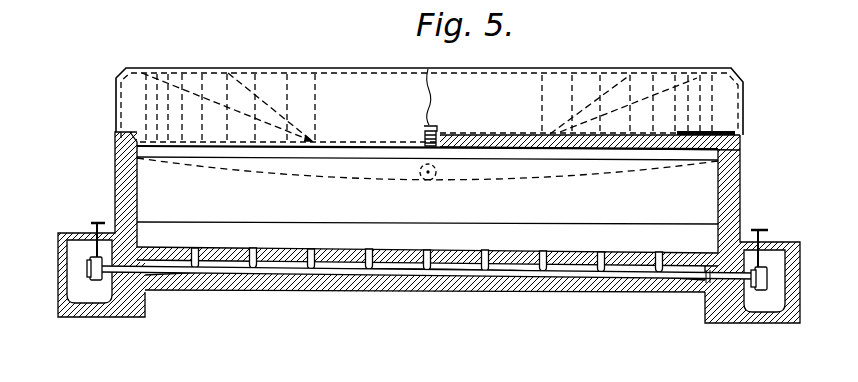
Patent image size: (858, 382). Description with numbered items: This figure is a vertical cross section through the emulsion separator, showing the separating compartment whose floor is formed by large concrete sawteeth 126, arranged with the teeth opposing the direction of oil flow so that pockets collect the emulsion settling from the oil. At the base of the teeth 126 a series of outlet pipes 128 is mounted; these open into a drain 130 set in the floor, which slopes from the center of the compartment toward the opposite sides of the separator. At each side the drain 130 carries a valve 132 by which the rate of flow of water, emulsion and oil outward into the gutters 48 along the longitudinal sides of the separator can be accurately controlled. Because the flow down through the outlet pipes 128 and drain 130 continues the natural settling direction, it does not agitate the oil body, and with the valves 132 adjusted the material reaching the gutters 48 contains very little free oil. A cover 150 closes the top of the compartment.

The gutter 48 is at (777, 272).
The sawtooth 126 is at (459, 237).
The outlet pipe 128 is at (369, 250).
The drain 130 is at (401, 262).
The valve 132 is at (96, 222).
The cover 150 is at (526, 77).